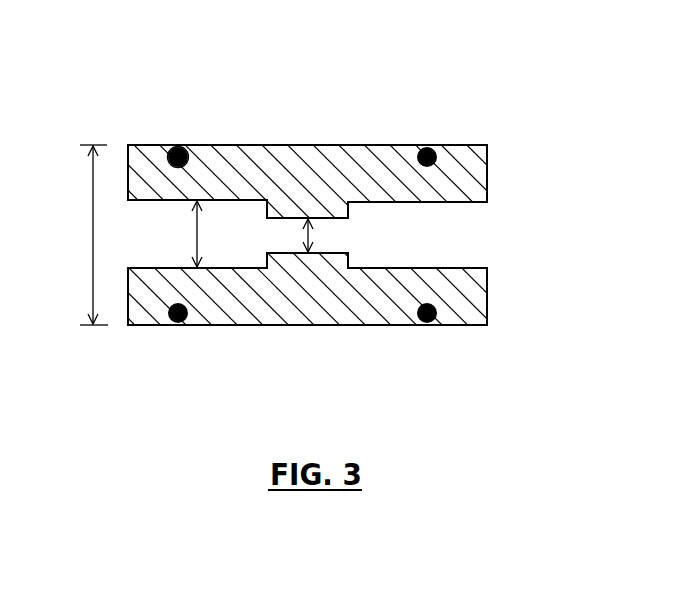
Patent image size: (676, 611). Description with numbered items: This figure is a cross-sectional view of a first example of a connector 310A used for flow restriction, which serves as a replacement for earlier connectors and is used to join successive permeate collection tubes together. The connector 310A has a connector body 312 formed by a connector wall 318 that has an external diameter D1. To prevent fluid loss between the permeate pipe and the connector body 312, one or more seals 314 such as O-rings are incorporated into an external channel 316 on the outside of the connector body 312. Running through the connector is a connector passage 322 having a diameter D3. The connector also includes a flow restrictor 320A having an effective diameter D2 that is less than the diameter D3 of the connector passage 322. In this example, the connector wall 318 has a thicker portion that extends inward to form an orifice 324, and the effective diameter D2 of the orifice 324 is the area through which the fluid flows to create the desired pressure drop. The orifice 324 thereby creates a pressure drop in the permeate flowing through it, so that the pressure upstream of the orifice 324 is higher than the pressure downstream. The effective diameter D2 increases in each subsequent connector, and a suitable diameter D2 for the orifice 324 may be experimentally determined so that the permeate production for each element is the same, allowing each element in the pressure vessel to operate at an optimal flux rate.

The connector 310A is at (467, 150).
The connector body 312 is at (322, 147).
The seal 314 is at (178, 147).
The external channel 316 is at (190, 163).
The connector wall 318 is at (235, 171).
The flow restrictor 320A is at (320, 294).
The connector passage 322 is at (130, 216).
The orifice 324 is at (285, 254).
The external diameter D1 is at (86, 235).
The effective diameter D2 is at (321, 235).
The diameter of the connector passage D3 is at (210, 234).